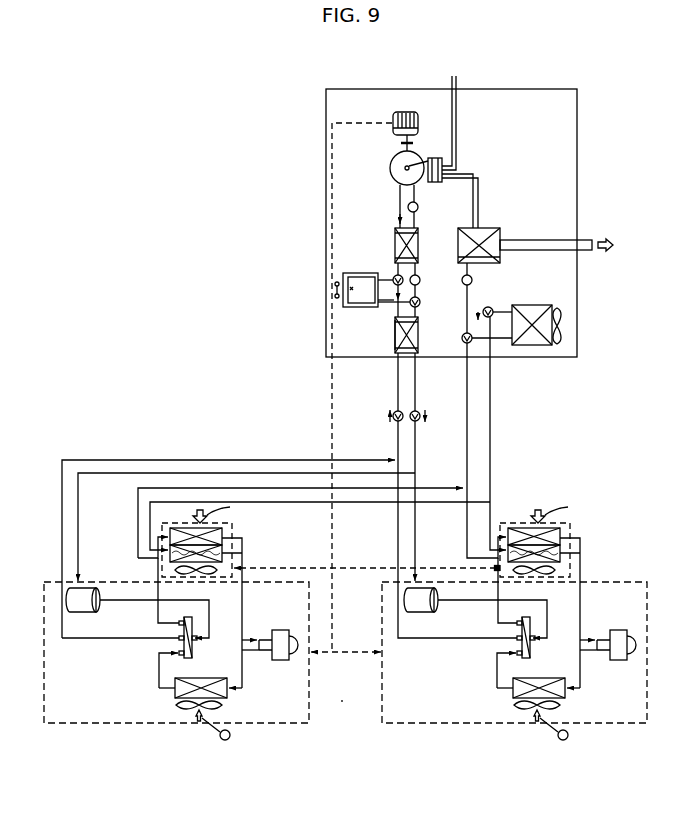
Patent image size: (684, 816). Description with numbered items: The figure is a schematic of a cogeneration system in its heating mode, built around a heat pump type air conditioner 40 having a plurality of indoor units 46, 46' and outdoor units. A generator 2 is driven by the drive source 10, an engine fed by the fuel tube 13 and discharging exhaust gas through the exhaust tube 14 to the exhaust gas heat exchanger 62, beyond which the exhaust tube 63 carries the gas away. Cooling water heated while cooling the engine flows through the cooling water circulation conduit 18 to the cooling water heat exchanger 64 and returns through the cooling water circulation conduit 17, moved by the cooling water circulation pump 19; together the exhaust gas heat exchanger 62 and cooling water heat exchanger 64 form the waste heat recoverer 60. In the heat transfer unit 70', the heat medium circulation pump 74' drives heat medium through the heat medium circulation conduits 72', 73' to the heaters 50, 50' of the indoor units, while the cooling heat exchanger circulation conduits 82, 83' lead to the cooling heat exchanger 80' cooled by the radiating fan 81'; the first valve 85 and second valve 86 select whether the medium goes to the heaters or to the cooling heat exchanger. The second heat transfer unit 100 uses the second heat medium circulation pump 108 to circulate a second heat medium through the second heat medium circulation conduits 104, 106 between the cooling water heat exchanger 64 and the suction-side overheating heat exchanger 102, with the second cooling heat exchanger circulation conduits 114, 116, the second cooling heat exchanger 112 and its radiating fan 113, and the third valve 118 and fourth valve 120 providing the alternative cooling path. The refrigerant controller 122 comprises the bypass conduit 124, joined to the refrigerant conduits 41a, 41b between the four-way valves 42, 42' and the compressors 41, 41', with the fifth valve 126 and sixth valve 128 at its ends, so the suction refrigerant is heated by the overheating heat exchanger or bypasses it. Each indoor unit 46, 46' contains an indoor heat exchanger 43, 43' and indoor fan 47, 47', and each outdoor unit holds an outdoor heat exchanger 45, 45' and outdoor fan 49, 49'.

The generator 2 is at (420, 121).
The drive source 10 is at (392, 163).
The fuel tube 13 is at (458, 130).
The exhaust tube 14 is at (480, 198).
The cooling water circulation conduit 17 is at (398, 222).
The cooling water circulation conduit 18 is at (398, 195).
The cooling water circulation pump 19 is at (419, 207).
The waste heat recoverer 60 is at (541, 211).
The exhaust gas heat exchanger 62 is at (502, 258).
The exhaust tube 63 is at (552, 240).
The cooling water heat exchanger 64 is at (393, 240).
The heat transfer unit 70' is at (434, 387).
The heat medium circulation conduit 72' is at (475, 450).
The heat medium circulation conduit 73' is at (475, 433).
The heat medium circulation pump 74' is at (457, 273).
The cooling heat exchanger 80' is at (559, 315).
The radiating fan 81' is at (580, 328).
The cooling heat exchanger circulation conduit 82 is at (492, 308).
The cooling heat exchanger circulation conduit 83' is at (492, 366).
The first valve 85 is at (483, 310).
The second valve 86 is at (461, 338).
The second heat transfer unit 100 is at (389, 357).
The suction-side overheating heat exchanger 102 is at (393, 340).
The second heat medium circulation conduit 104 is at (393, 302).
The second heat medium circulation conduit 106 is at (412, 305).
The second heat medium circulation pump 108 is at (420, 278).
The second cooling heat exchanger 112 is at (350, 307).
The radiating fan 113 is at (337, 281).
The second cooling heat exchanger circulation conduit 114 is at (393, 279).
The second cooling heat exchanger circulation conduit 116 is at (375, 306).
The third valve 118 is at (397, 272).
The fourth valve 120 is at (420, 302).
The refrigerant controller 122 is at (391, 443).
The bypass conduit 124 is at (400, 428).
The fifth valve 126 is at (393, 418).
The sixth valve 128 is at (419, 419).
The heat pump type air conditioner 40 is at (342, 728).
The compressor 41 is at (425, 608).
The compressor 41' is at (86, 611).
The refrigerant conduit 41a is at (397, 388).
The refrigerant conduit 41b is at (416, 385).
The 4-way valve 42 is at (537, 641).
The 4-way valve 42' is at (200, 643).
The indoor heat exchanger 43 is at (556, 539).
The indoor heat exchanger 43' is at (234, 542).
The outdoor heat exchanger 45 is at (550, 695).
The outdoor heat exchanger 45' is at (212, 695).
The indoor unit 46 is at (566, 531).
The indoor unit 46' is at (226, 533).
The indoor fan 47 is at (563, 565).
The indoor fan 47' is at (228, 563).
The outdoor fan 49 is at (518, 704).
The outdoor fan 49' is at (181, 703).
The heater 50 is at (570, 549).
The heater 50' is at (233, 549).